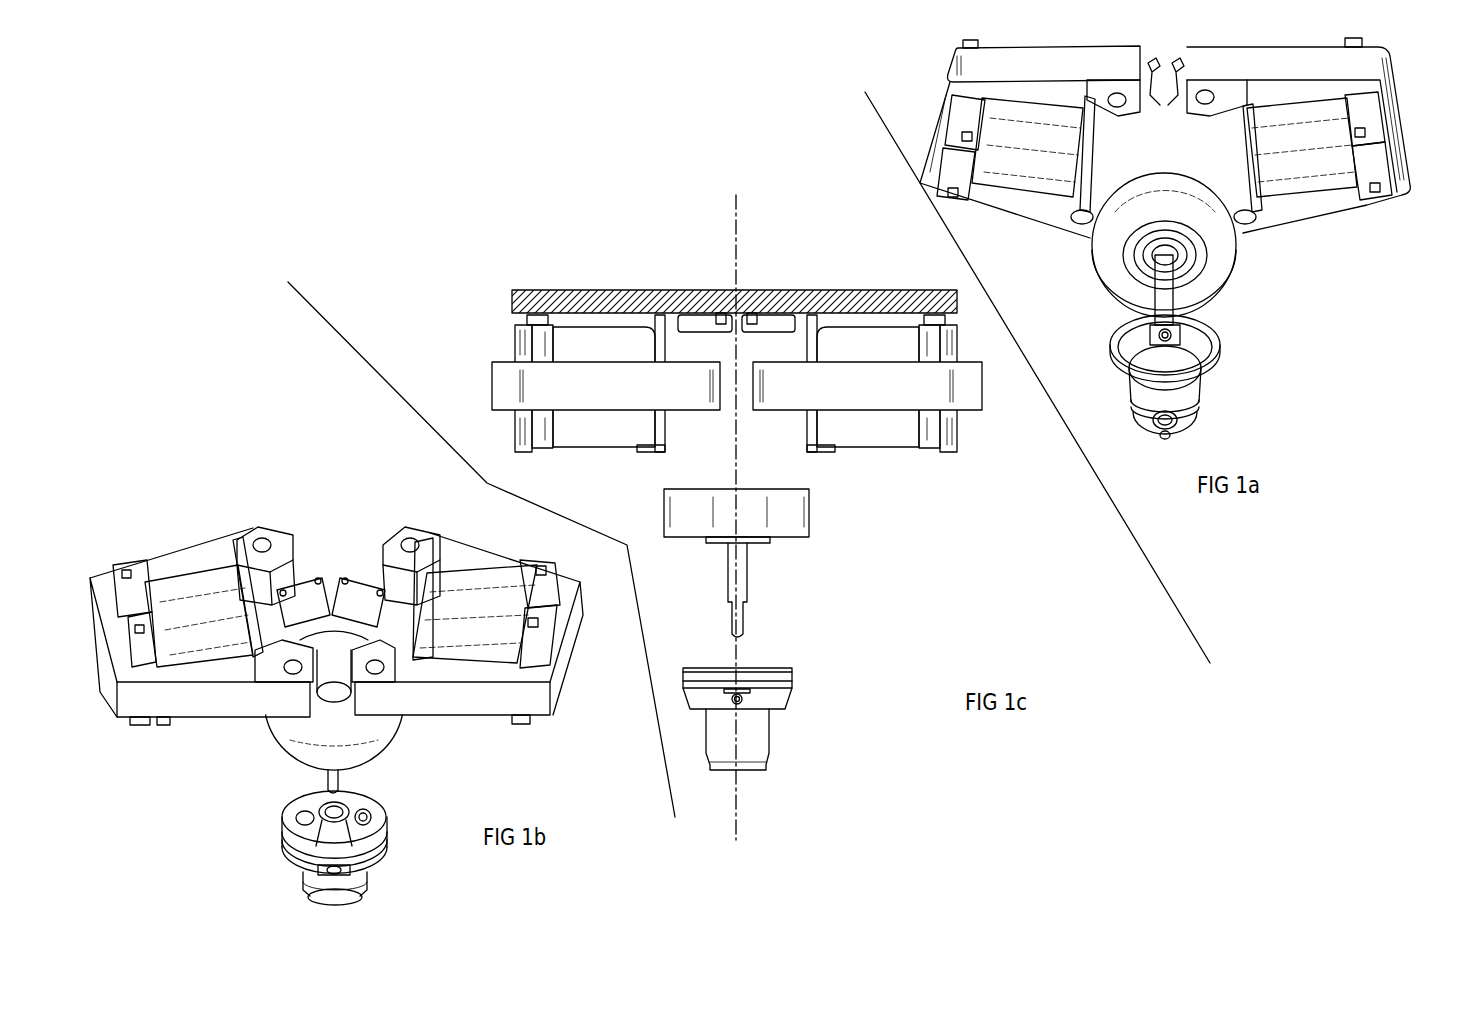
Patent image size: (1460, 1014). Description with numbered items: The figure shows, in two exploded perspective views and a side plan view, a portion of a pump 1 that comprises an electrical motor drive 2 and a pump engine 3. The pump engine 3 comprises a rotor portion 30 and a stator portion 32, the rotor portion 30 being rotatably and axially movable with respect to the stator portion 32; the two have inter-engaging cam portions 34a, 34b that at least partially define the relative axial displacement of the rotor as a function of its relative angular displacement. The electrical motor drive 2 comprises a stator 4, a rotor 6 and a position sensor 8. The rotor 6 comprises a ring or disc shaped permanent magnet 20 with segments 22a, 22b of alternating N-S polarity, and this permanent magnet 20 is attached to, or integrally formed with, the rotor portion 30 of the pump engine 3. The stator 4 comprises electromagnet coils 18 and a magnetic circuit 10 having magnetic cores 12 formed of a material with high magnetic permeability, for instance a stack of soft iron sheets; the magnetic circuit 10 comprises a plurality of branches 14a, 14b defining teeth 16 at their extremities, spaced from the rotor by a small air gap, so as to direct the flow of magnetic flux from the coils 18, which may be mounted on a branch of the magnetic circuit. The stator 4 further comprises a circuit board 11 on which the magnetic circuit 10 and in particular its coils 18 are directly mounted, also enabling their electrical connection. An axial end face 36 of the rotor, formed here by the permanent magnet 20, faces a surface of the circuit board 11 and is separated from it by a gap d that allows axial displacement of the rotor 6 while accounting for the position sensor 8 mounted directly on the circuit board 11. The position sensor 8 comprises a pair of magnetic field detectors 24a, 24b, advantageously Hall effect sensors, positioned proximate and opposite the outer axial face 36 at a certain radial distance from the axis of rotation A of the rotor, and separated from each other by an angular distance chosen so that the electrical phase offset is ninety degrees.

In FIG. 1C, the pump 1 is at (399, 332).
In FIG. 1C, the electrical motor drive 2 is at (978, 297).
In FIG. 1C, the pump engine 3 is at (866, 525).
In FIG. 1C, the stator 4 is at (466, 378).
In FIG. 1C, the rotor 6 is at (608, 490).
In FIG. 1B, the rotor 6 is at (254, 748).
In FIG. 1C, the position sensor 8 is at (710, 278).
In FIG. 1C, the magnetic circuit 10 is at (504, 358).
In FIG. 1B, the magnetic circuit 10 is at (143, 742).
In FIG. 1A, the magnetic circuit 10 is at (1165, 138).
In FIG. 1C, the circuit board 11 is at (752, 300).
In FIG. 1C, the magnetic core 12 is at (545, 388).
In FIG. 1B, the magnetic core 12 is at (105, 660).
In FIG. 1A, the magnetic core 12 is at (937, 115).
In FIG. 1B, the branch 14a is at (455, 552).
In FIG. 1A, the branch 14a is at (1016, 153).
In FIG. 1B, the branch 14b is at (450, 675).
In FIG. 1A, the branch 14b is at (1317, 152).
In FIG. 1B, the teeth 16 is at (283, 562).
In FIG. 1A, the teeth 16 is at (1167, 98).
In FIG. 1C, the coil 18 is at (597, 343).
In FIG. 1B, the coil 18 is at (185, 575).
In FIG. 1A, the coil 18 is at (1018, 172).
In FIG. 1C, the permanent magnet 20 is at (788, 518).
In FIG. 1B, the permanent magnet 20 is at (380, 748).
In FIG. 1A, the permanent magnet 20 is at (1238, 262).
In FIG. 1A, the segment 22a is at (1100, 262).
In FIG. 1A, the segment 22b is at (1127, 300).
In FIG. 1B, the magnetic field detector 24a is at (297, 585).
In FIG. 1A, the magnetic field detector 24a is at (1157, 105).
In FIG. 1B, the magnetic field detector 24b is at (345, 585).
In FIG. 1A, the magnetic field detector 24b is at (1173, 105).
In FIG. 1C, the rotor portion 30 is at (742, 574).
In FIG. 1B, the rotor portion 30 is at (348, 788).
In FIG. 1A, the rotor portion 30 is at (1167, 284).
In FIG. 1C, the stator portion 32 is at (748, 735).
In FIG. 1B, the stator portion 32 is at (292, 866).
In FIG. 1A, the stator portion 32 is at (1200, 392).
In FIG. 1A, the cam portion 34a is at (1185, 250).
In FIG. 1B, the cam portion 34b is at (370, 848).
In FIG. 1C, the axial end face 36 is at (736, 489).
In FIG. 1C, the axis of rotation A is at (742, 207).
In FIG. 1C, the gap d is at (492, 360).